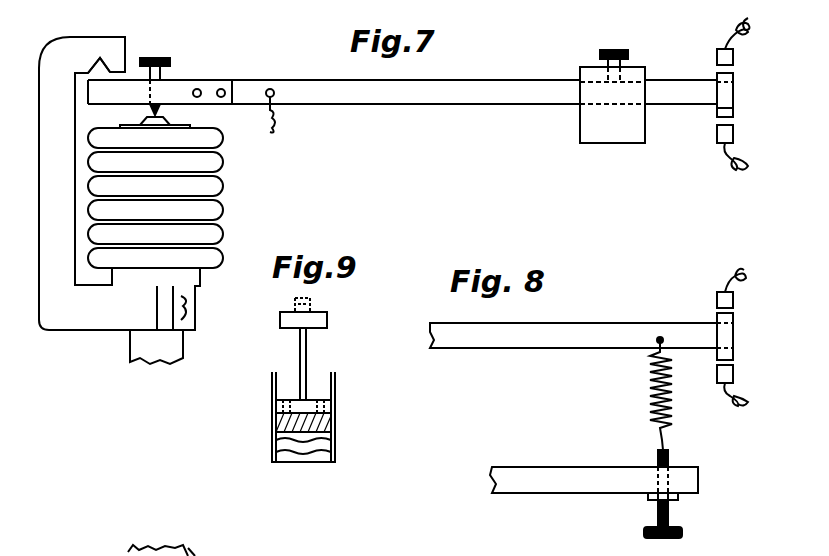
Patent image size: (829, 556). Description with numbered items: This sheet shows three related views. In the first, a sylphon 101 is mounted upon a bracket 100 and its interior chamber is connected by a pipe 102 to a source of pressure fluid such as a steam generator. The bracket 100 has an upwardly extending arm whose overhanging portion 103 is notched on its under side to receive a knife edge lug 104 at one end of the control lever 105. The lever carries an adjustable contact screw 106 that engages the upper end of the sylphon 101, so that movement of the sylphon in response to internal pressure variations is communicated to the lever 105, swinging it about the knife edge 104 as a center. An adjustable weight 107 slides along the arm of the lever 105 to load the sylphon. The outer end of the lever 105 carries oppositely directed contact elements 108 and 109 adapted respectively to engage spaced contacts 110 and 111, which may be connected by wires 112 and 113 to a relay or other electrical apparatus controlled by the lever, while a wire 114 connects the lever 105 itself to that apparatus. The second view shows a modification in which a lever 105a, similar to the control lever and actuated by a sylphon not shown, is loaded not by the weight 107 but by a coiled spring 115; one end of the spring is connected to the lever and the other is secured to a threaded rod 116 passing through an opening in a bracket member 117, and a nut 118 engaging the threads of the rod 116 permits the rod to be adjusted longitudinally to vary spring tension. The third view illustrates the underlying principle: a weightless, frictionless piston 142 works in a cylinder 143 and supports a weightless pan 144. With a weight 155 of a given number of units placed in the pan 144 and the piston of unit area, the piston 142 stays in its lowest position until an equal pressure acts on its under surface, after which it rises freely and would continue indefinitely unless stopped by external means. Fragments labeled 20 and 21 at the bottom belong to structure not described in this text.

In FIG. 7, the bracket 100 is at (80, 332).
In FIG. 7, the sylphon 101 is at (220, 200).
In FIG. 7, the pipe 102 is at (185, 352).
In FIG. 7, the overhanging portion 103 is at (108, 47).
In FIG. 7, the knife edge lug 104 is at (98, 68).
In FIG. 7, the control lever 105 is at (250, 82).
In FIG. 8, the lever 105a is at (485, 350).
In FIG. 7, the adjustable contact screw 106 is at (167, 72).
In FIG. 7, the adjustable weight 107 is at (590, 143).
In FIG. 7, the contact element 108 is at (733, 113).
In FIG. 7, the contact element 109 is at (733, 77).
In FIG. 8, the contact element 109 is at (725, 336).
In FIG. 7, the contact 110 is at (733, 135).
In FIG. 8, the contact 110 is at (732, 385).
In FIG. 7, the contact 111 is at (733, 55).
In FIG. 8, the contact 111 is at (731, 288).
In FIG. 7, the wire 112 is at (733, 165).
In FIG. 7, the wire 113 is at (735, 30).
In FIG. 7, the wire 114 is at (278, 128).
In FIG. 8, the coiled spring 115 is at (650, 395).
In FIG. 8, the threaded rod 116 is at (672, 517).
In FIG. 8, the bracket member 117 is at (598, 490).
In FIG. 8, the nut 118 is at (680, 497).
In FIG. 9, the piston 142 is at (337, 405).
In FIG. 9, the cylinder 143 is at (272, 445).
In FIG. 9, the pan 144 is at (330, 325).
In FIG. 9, the weight 155 is at (312, 300).
In FIG. 9, the base 20 is at (141, 541).
In FIG. 9, the member 21 is at (208, 543).